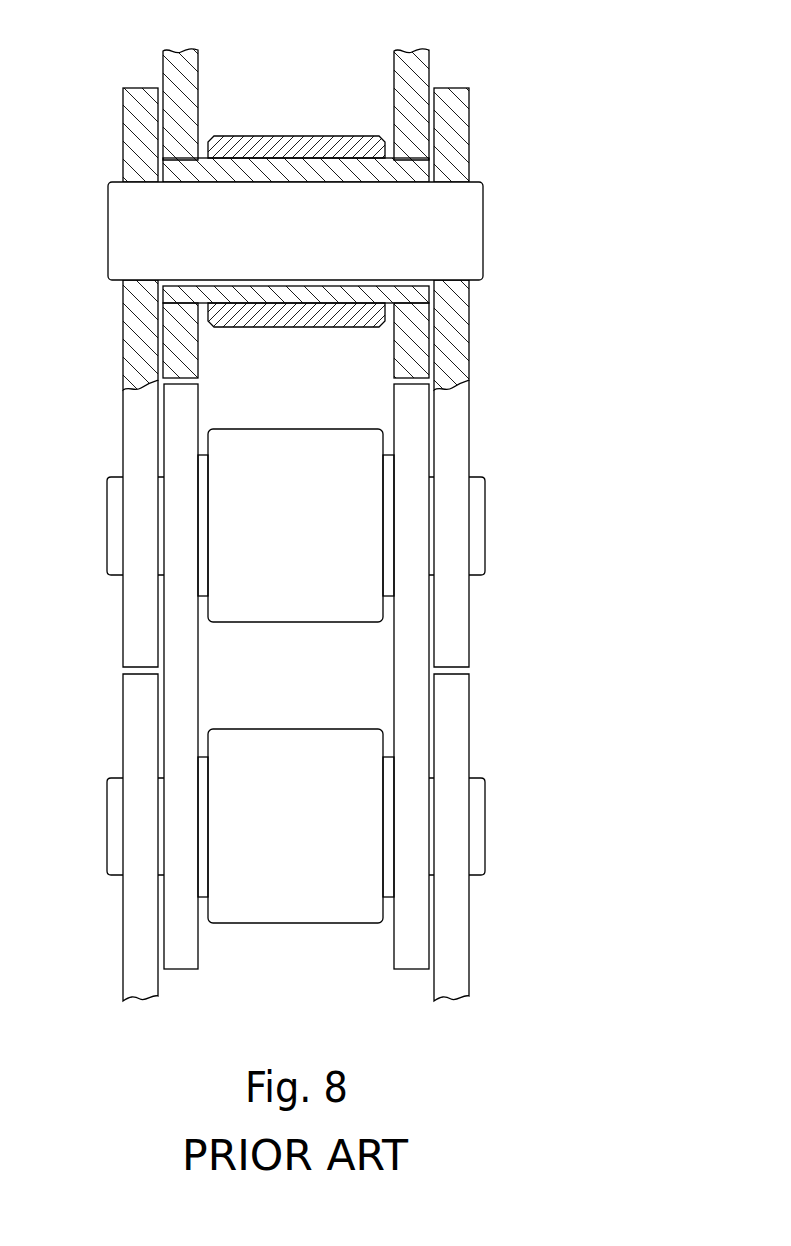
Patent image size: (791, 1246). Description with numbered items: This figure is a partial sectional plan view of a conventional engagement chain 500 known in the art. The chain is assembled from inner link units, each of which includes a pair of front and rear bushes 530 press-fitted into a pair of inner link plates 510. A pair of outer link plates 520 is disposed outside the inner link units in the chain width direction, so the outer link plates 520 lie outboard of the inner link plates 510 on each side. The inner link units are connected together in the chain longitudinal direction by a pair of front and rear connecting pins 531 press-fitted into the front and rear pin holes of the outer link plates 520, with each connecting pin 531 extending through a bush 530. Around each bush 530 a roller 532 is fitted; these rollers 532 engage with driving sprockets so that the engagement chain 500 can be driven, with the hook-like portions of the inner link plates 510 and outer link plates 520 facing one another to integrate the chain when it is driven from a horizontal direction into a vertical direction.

The engagement chain 500 is at (513, 83).
The inner link plate 510 is at (177, 75).
The outer link plate 520 is at (137, 316).
The bush 530 is at (243, 170).
The connecting pin 531 is at (470, 218).
The roller 532 is at (318, 145).